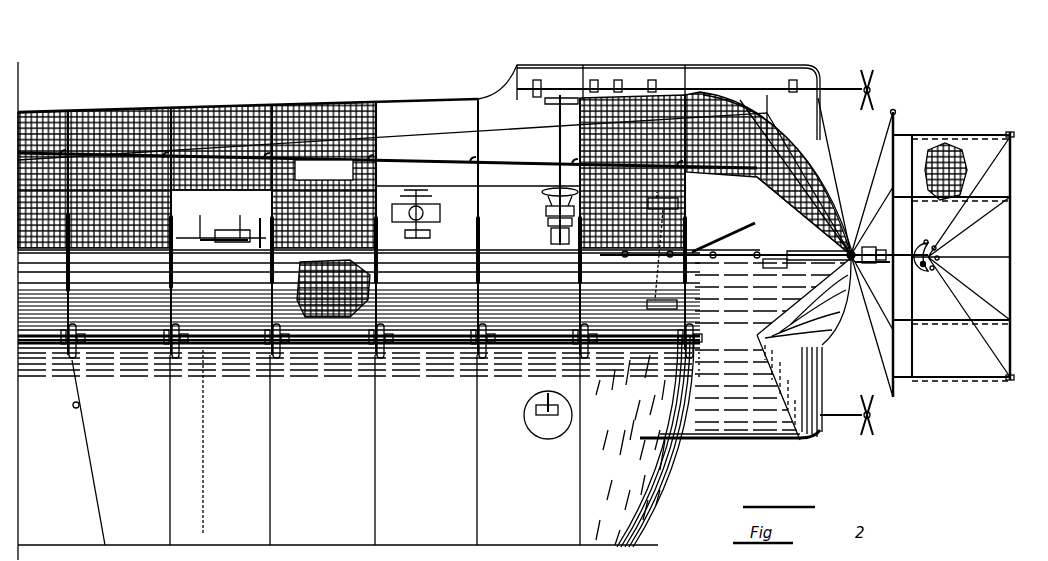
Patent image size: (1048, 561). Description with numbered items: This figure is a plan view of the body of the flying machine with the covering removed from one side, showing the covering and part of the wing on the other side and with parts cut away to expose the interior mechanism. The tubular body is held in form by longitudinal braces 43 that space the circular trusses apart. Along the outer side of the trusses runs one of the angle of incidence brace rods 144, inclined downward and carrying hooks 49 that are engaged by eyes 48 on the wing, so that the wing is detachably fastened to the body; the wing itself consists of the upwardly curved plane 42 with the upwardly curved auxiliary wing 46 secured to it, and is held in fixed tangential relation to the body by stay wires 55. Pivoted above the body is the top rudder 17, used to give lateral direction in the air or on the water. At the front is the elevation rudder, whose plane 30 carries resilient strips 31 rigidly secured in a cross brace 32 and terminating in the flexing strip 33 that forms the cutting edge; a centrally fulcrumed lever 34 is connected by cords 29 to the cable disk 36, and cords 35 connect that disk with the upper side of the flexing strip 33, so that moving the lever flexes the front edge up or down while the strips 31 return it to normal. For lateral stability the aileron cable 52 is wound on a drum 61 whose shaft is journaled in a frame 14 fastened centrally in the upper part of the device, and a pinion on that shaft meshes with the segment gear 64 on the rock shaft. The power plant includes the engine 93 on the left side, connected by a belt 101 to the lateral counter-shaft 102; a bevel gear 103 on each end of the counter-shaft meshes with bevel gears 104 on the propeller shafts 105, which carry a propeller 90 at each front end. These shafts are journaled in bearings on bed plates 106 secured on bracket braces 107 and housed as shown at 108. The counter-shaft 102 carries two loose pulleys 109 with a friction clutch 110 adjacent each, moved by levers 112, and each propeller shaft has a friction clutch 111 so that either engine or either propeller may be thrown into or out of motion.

The frame 14 is at (260, 245).
The top rudder 17 is at (725, 240).
The cords 29 is at (883, 250).
The plane 30 is at (961, 256).
The resilient strips 31 is at (915, 139).
The cross brace 32 is at (896, 118).
The flexing strip 33 is at (1012, 228).
The lever 34 is at (872, 273).
The cords 35 is at (975, 210).
The cable disk 36 is at (940, 252).
The upwardly curved plane 42 is at (645, 442).
The longitudinal braces 43 is at (434, 204).
The auxiliary wing 46 is at (68, 452).
The eyes 48 is at (160, 362).
The hooks 49 is at (80, 152).
The cable 52 is at (680, 205).
The stay wires 55 is at (580, 470).
The drum 61 is at (230, 242).
The segment gear 64 is at (198, 236).
The propeller 90 is at (870, 88).
The engine 93 is at (428, 216).
The belt 101 is at (546, 212).
The counter-shaft 102 is at (556, 148).
The bevel gear 103 is at (545, 110).
The bevel gears 104 is at (540, 80).
The propeller shafts 105 is at (640, 84).
The bed plates 106 is at (760, 66).
The bracket braces 107 is at (548, 62).
The housing 108 is at (765, 420).
The loose pulleys 109 is at (542, 190).
The friction clutch 110 is at (552, 237).
The friction clutch 111 is at (610, 78).
The levers 112 is at (548, 222).
The angle of incidence brace rods 144 is at (324, 170).